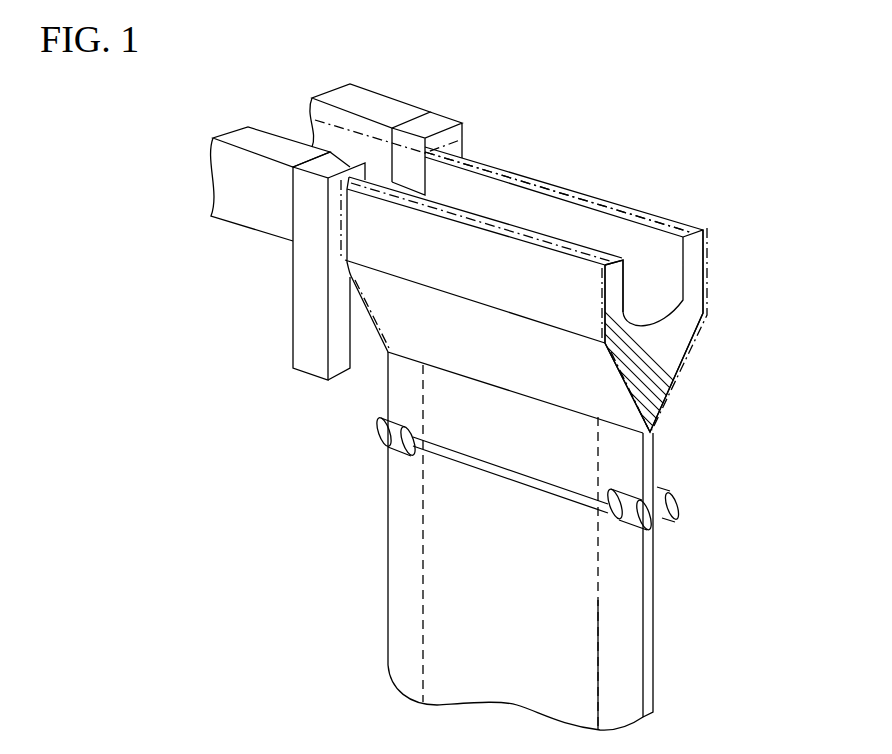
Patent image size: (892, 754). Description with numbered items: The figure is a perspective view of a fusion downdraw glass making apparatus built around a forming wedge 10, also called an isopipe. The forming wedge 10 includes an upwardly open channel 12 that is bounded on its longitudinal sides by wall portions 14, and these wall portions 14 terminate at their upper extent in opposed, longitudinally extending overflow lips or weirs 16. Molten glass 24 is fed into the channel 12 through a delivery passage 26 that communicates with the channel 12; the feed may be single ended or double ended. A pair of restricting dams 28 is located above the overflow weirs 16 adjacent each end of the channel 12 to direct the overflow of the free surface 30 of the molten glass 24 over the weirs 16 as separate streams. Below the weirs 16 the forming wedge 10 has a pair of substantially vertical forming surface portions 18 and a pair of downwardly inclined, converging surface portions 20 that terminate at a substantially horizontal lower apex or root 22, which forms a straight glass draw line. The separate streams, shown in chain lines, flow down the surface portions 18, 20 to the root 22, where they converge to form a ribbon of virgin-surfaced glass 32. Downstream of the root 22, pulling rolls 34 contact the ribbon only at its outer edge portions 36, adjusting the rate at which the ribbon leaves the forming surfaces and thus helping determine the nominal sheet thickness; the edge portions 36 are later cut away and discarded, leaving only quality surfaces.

The forming wedge 10 is at (698, 312).
The channel 12 is at (660, 292).
The wall portions 14 is at (625, 283).
The overflow weirs 16 is at (648, 221).
The vertical forming surface portions 18 is at (393, 238).
The converging surface portions 20 is at (493, 357).
The root 22 is at (572, 414).
The molten glass 24 is at (289, 123).
The delivery passage 26 is at (367, 105).
The restricting dams 28 is at (427, 128).
The free surface 30 is at (502, 194).
The glass ribbon 32 is at (387, 492).
The pulling rolls 34 is at (380, 433).
The edge portions 36 is at (620, 650).